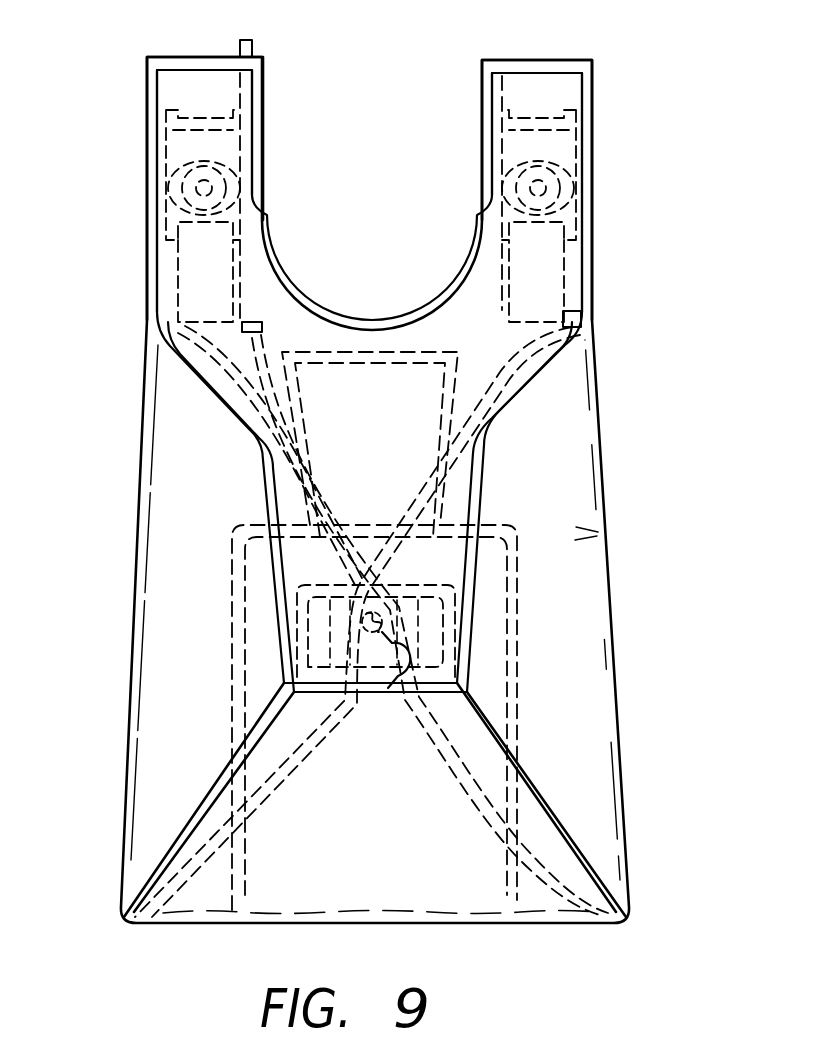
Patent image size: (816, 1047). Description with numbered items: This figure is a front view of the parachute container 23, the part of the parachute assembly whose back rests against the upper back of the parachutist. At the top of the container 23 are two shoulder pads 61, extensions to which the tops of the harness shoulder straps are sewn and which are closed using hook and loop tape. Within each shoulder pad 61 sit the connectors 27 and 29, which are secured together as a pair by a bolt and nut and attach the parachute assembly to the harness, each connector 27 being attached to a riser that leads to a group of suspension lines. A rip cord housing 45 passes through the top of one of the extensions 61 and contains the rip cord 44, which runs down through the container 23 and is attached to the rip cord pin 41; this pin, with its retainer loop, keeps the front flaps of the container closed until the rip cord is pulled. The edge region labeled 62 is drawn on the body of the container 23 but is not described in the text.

The container 23 is at (608, 500).
The connector 27 is at (166, 212).
The connector 29 is at (241, 150).
The rip cord pin 41 is at (404, 690).
The rip cord 44 is at (253, 347).
The rip cord housing 45 is at (252, 45).
The shoulder pads 61 is at (147, 66).
The waist edge 62 is at (510, 418).